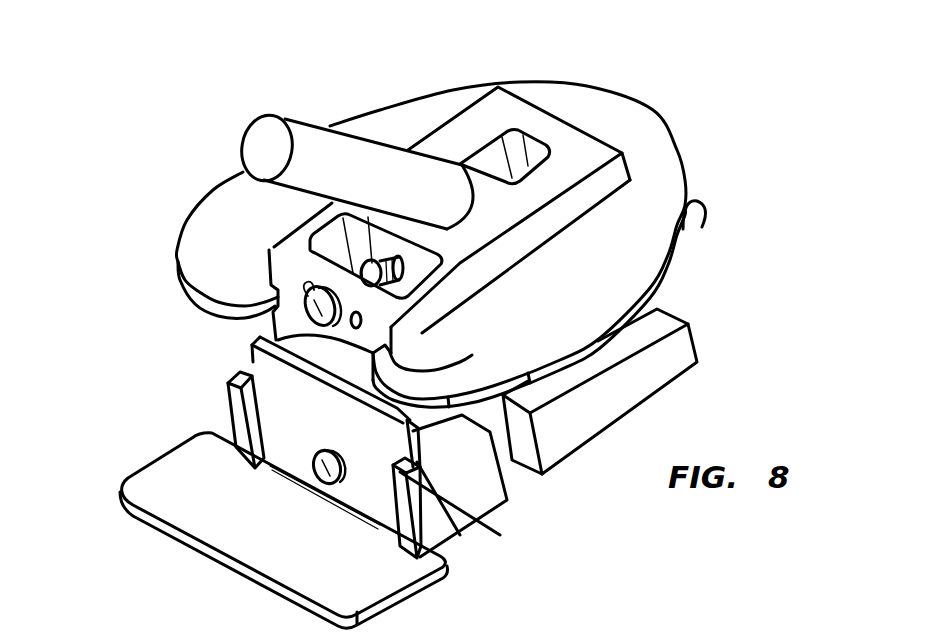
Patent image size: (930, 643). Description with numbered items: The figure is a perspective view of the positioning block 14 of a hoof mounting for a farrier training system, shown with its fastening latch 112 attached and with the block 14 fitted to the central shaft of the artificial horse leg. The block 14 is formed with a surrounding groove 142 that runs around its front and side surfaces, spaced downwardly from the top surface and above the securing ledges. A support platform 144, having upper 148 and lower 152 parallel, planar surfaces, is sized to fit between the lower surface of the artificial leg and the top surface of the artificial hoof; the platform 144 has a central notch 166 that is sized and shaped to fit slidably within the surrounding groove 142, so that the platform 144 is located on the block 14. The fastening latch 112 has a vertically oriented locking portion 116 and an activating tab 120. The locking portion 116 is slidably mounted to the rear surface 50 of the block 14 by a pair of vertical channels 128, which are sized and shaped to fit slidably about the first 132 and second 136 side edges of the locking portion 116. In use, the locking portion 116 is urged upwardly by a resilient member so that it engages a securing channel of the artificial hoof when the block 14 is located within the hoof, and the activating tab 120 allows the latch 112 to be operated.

The positioning block 14 is at (655, 297).
The rear surface 50 is at (270, 302).
The fastening latch 112 is at (408, 446).
The locking portion 116 is at (253, 361).
The activating tab 120 is at (268, 533).
The vertical channels 128 is at (256, 368).
The first side edge 132 is at (258, 338).
The second side edge 136 is at (412, 444).
The surrounding groove 142 is at (275, 243).
The support platform 144 is at (607, 100).
The upper planar surface 148 is at (405, 118).
The lower planar surface 152 is at (678, 203).
The central notch 166 is at (600, 140).